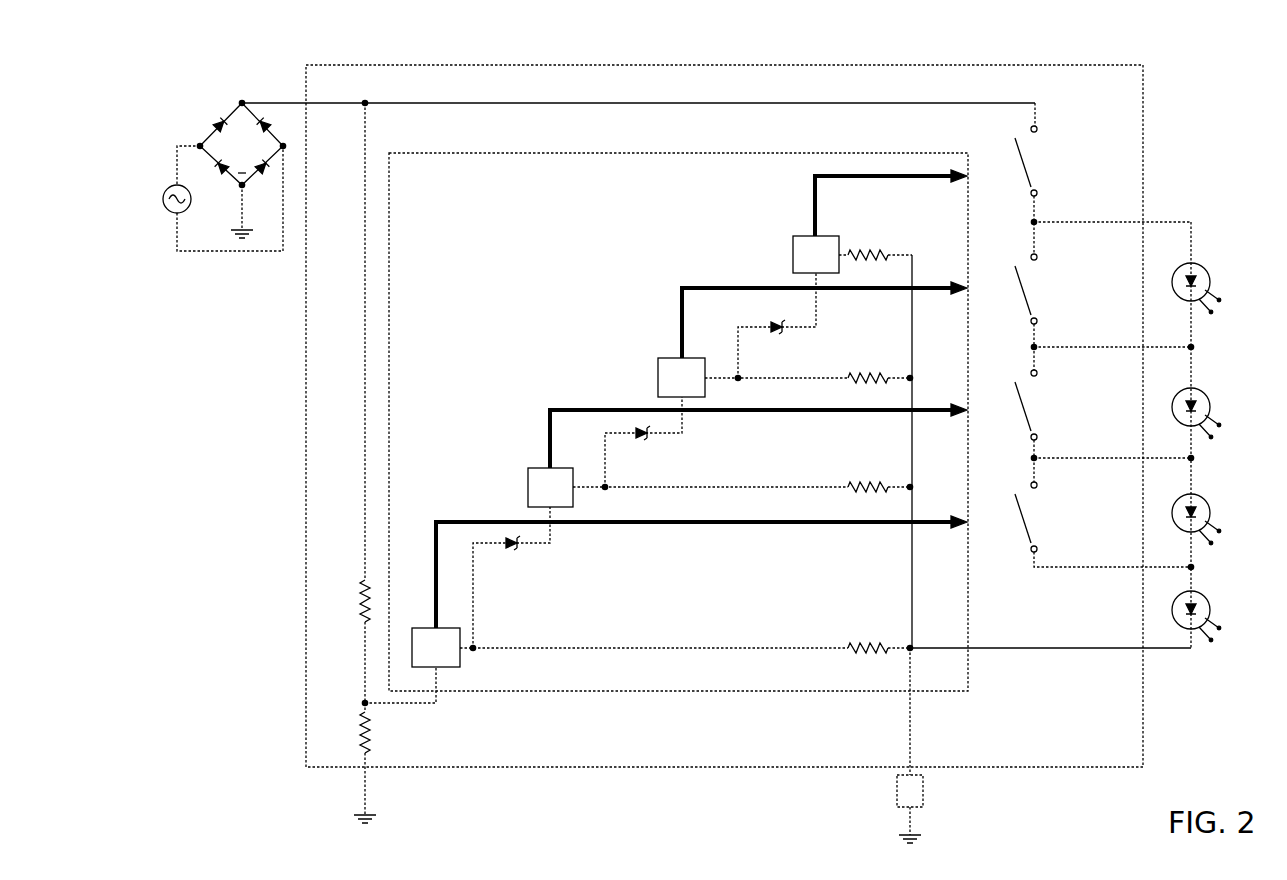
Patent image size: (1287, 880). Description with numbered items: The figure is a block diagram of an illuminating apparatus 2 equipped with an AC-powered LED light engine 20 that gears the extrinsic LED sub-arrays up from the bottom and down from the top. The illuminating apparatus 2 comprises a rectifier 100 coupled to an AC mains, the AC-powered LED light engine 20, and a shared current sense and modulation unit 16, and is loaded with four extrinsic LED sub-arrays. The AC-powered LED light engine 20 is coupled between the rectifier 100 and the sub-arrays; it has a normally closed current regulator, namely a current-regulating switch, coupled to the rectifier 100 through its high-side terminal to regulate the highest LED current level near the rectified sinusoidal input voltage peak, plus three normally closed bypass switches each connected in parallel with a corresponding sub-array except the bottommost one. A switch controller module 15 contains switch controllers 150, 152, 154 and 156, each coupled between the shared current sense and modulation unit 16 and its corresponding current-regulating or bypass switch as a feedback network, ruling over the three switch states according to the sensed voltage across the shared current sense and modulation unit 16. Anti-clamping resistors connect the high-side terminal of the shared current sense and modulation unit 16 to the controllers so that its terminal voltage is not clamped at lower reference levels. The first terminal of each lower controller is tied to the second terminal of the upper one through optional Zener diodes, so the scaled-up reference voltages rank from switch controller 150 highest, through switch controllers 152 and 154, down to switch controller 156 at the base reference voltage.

The illuminating apparatus 2 is at (186, 74).
The AC-powered LED light engine 20 is at (1143, 160).
The switch controller module 15 is at (768, 153).
The rectifier 100 is at (258, 155).
The switch controller 150 is at (832, 264).
The switch controller 152 is at (697, 386).
The switch controller 154 is at (566, 496).
The switch controller 156 is at (451, 656).
The shared current sense and modulation unit 16 is at (923, 795).